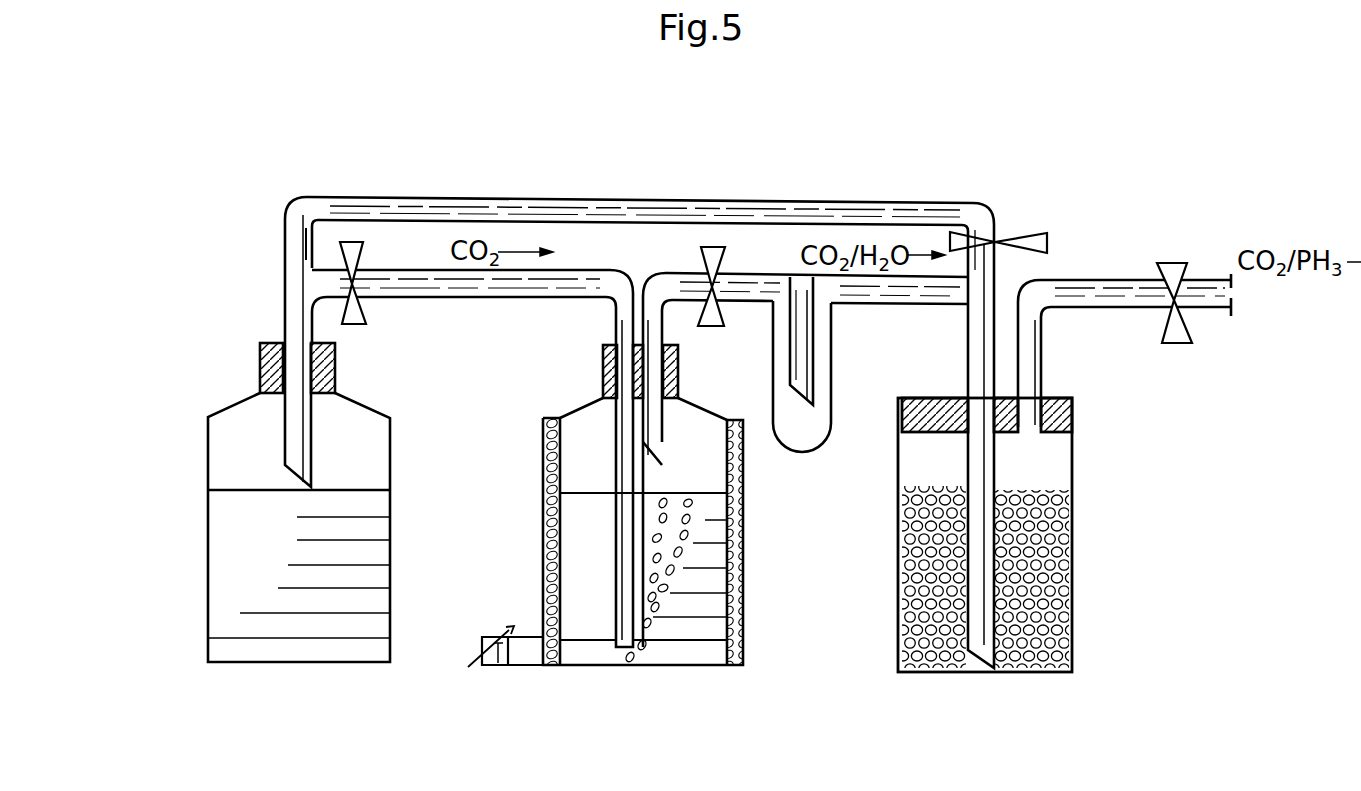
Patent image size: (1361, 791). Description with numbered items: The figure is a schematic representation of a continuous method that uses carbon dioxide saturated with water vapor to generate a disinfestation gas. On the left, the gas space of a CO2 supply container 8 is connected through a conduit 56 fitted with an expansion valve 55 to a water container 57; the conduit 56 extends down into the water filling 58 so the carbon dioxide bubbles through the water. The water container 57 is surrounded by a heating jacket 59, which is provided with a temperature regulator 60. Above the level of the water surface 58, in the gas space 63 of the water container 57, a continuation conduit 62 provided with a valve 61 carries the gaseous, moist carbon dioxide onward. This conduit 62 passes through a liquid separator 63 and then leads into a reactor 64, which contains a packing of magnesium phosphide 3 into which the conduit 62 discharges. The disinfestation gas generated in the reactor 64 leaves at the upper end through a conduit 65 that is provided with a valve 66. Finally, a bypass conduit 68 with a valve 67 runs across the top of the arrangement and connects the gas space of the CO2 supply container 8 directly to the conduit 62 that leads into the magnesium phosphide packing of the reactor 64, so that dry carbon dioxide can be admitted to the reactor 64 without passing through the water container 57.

The magnesium phosphide packing 3 is at (1043, 558).
The CO2 supply container 8 is at (389, 638).
The expansion valve 55 is at (343, 313).
The conduit 56 is at (565, 283).
The water container 57 is at (524, 498).
The water filling 58 is at (588, 603).
The heating jacket 59 is at (743, 552).
The temperature regulator 60 is at (497, 663).
The valve 61 is at (712, 247).
The continuation conduit 62 is at (672, 275).
The liquid separator 63 is at (820, 375).
The reactor 64 is at (1057, 460).
The conduit 65 is at (1107, 290).
The valve 66 is at (1178, 347).
The valve 67 is at (1037, 232).
The bypass conduit 68 is at (305, 213).